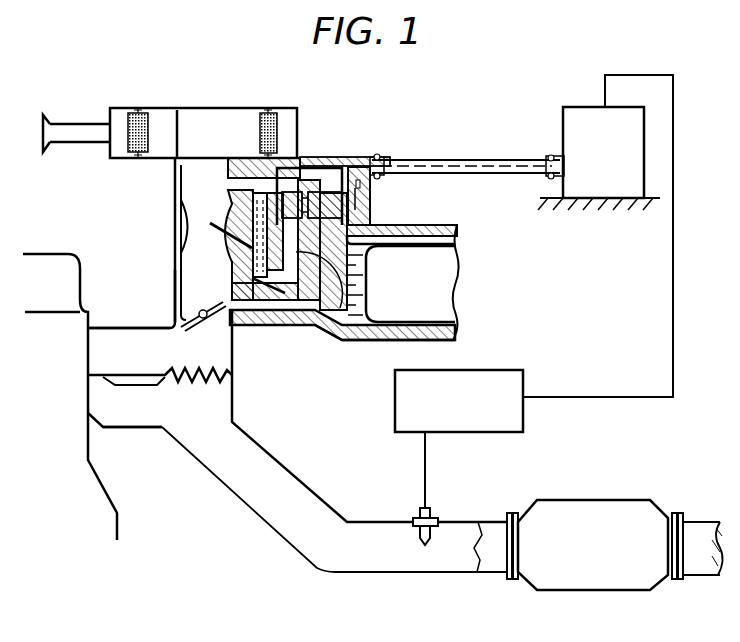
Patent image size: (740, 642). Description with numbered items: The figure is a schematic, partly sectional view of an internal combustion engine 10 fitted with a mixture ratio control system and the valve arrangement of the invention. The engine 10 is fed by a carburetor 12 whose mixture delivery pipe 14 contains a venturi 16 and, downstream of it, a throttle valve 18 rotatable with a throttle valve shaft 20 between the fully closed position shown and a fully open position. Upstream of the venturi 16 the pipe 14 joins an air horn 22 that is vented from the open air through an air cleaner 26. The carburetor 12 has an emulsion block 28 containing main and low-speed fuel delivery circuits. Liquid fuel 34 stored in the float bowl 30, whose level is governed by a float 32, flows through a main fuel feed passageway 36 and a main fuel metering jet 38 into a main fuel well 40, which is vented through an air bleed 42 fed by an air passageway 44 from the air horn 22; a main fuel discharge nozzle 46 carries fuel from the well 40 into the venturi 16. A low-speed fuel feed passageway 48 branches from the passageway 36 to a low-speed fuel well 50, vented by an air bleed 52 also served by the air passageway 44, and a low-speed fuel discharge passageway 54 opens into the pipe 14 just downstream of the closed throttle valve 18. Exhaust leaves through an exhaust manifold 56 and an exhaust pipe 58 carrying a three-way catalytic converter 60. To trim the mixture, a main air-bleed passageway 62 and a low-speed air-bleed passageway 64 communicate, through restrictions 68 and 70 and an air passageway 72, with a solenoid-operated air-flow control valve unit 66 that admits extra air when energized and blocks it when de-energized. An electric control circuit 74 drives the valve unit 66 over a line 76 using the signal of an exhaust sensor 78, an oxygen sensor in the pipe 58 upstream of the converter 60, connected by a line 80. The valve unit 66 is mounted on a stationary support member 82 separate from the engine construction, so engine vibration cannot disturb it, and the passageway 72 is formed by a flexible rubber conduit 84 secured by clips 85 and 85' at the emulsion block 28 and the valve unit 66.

The internal combustion engine 10 is at (72, 397).
The carburetor 12 is at (160, 230).
The mixture delivery pipe 14 is at (175, 292).
The venturi 16 is at (175, 258).
The throttle valve 18 is at (150, 330).
The throttle valve shaft 20 is at (190, 328).
The air horn 22 is at (175, 180).
The air cleaner 26 is at (193, 108).
The emulsion block 28 is at (273, 335).
The carburetor float bowl 30 is at (440, 225).
The float 32 is at (421, 288).
The liquid fuel 34 is at (366, 315).
The main fuel feed passageway 36 is at (328, 322).
The main fuel metering jet 38 is at (363, 337).
The main fuel well 40 is at (250, 284).
The air bleed 42 is at (250, 190).
The air passageway 44 is at (230, 180).
The main fuel discharge nozzle 46 is at (212, 238).
The low-speed fuel feed passageway 48 is at (322, 326).
The low-speed fuel well 50 is at (300, 303).
The air bleed 52 is at (304, 200).
The low-speed fuel discharge passageway 54 is at (258, 312).
The exhaust manifold 56 is at (137, 387).
The exhaust pipe 58 is at (457, 574).
The catalytic converter 60 is at (609, 558).
The main air-bleed passageway 62 is at (302, 157).
The low-speed air-bleed passageway 64 is at (356, 214).
The solenoid-operated air-flow control valve unit 66 is at (645, 136).
The restriction 68 is at (344, 158).
The restriction 70 is at (356, 200).
The air passageway 72 is at (487, 170).
The electric control circuit 74 is at (480, 433).
The line 76 is at (668, 325).
The exhaust sensor 78 is at (440, 528).
The line 80 is at (427, 479).
The stationary support member 82 is at (655, 200).
The conduit 84 is at (442, 160).
The clip 85 is at (390, 149).
The clip 85' is at (541, 144).